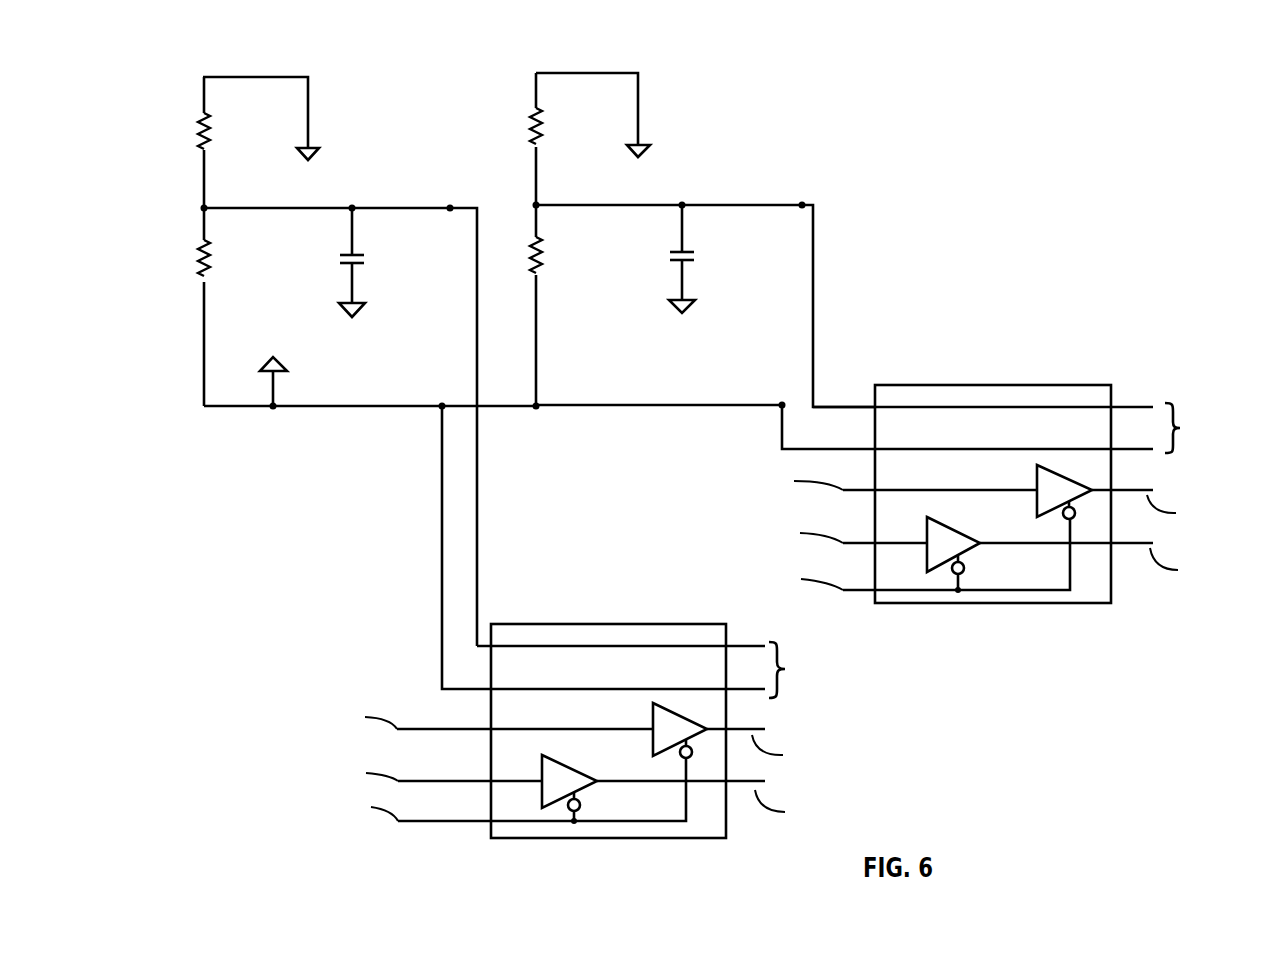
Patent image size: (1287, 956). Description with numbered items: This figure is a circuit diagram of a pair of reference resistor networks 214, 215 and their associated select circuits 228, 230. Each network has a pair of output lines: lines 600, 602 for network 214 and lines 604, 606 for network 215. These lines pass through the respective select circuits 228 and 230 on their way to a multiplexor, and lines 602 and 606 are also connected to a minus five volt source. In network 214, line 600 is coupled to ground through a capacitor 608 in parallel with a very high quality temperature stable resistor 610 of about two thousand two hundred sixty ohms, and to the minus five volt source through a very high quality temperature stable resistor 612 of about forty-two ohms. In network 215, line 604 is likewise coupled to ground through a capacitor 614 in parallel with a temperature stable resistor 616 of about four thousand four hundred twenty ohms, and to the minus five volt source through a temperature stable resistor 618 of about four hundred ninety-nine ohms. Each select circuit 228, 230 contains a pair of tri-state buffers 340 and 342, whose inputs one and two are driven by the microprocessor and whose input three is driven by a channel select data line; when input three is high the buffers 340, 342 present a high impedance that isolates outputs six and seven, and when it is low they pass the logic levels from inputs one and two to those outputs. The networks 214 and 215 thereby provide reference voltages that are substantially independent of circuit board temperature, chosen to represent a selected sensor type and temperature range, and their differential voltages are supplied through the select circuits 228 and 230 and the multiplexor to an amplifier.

The reference resistor network 214 is at (347, 131).
The reference resistor network 215 is at (684, 126).
The resistor 610 is at (213, 137).
The resistor 612 is at (223, 268).
The capacitor 608 is at (373, 260).
The resistor 616 is at (538, 150).
The resistor 618 is at (545, 280).
The capacitor 614 is at (697, 273).
The output line 604 is at (820, 342).
The output line 606 is at (778, 427).
The output line 600 is at (482, 593).
The output line 602 is at (437, 637).
The select circuit 228 is at (587, 622).
The select circuit 230 is at (923, 383).
The tri-state buffer 340 is at (1040, 518).
The tri-state buffer 342 is at (944, 565).